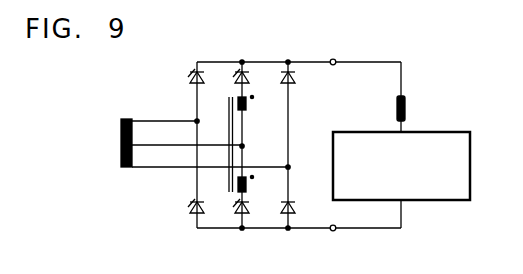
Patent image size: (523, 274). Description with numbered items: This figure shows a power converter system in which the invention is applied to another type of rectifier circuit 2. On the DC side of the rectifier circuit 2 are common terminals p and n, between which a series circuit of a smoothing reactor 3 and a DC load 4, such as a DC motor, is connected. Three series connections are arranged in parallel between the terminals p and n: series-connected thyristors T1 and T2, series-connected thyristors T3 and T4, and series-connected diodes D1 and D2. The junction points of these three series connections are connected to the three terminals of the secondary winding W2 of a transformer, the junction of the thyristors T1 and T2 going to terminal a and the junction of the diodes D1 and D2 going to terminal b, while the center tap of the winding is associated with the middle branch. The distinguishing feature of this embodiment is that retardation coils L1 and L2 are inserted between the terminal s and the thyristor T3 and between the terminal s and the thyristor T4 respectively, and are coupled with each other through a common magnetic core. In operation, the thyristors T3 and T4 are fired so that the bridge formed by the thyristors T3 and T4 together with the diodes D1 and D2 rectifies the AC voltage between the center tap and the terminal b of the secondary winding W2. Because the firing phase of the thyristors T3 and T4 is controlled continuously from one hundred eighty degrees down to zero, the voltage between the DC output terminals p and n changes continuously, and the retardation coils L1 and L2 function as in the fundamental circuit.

The rectifier circuit 2 is at (252, 47).
The smoothing reactor 3 is at (406, 109).
The DC load 4 is at (470, 152).
The secondary winding W2 is at (127, 118).
The thyristor T1 is at (190, 73).
The thyristor T2 is at (190, 208).
The thyristor T3 is at (246, 78).
The thyristor T4 is at (236, 211).
The diode D1 is at (292, 80).
The diode D2 is at (296, 212).
The retardation coil L1 is at (246, 106).
The retardation coil L2 is at (247, 185).
The terminal a is at (196, 122).
The terminal s is at (245, 146).
The terminal b is at (290, 168).
The DC output terminal p is at (334, 59).
The DC output terminal n is at (336, 231).